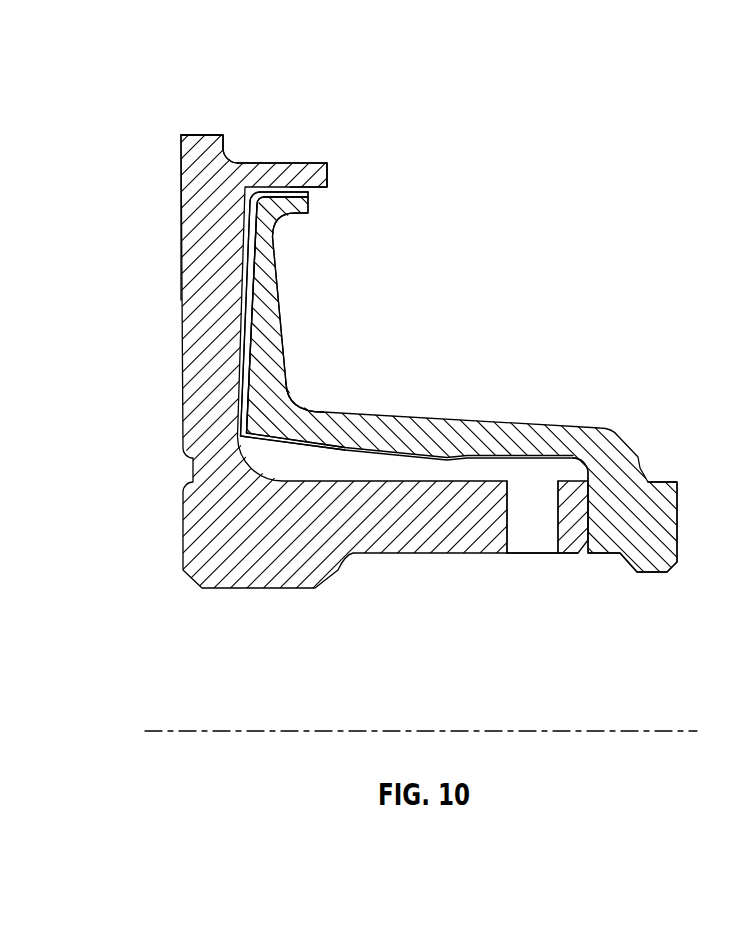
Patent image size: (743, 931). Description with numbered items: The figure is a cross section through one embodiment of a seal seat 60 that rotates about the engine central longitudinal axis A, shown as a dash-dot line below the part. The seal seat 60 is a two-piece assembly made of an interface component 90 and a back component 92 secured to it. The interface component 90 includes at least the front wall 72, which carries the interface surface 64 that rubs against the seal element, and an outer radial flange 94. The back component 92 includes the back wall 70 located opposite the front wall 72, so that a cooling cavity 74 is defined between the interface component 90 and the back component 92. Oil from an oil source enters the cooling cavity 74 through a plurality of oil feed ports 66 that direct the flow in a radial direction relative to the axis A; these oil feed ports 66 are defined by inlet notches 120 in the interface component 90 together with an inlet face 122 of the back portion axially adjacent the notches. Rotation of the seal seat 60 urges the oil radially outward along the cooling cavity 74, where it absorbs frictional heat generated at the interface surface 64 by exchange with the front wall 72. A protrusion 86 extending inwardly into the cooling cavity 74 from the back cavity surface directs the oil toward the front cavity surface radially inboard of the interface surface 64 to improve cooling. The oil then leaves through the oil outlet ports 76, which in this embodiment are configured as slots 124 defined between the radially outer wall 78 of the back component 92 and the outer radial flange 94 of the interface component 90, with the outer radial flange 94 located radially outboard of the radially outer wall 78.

The seal seat 60 is at (378, 159).
The interface surface 64 is at (181, 165).
The oil feed ports 66 is at (553, 564).
The back wall 70 is at (195, 377).
The front wall 72 is at (393, 427).
The cooling cavity 74 is at (245, 328).
The oil outlet ports 76 is at (293, 191).
The radially outer wall 78 is at (290, 214).
The protrusion 86 is at (243, 433).
The interface component 90 is at (166, 127).
The back component 92 is at (383, 288).
The outer radial flange 94 is at (303, 162).
The inlet notches 120 is at (535, 543).
The inlet face 122 is at (590, 517).
The slots 124 is at (308, 197).
The engine central longitudinal axis A is at (659, 727).